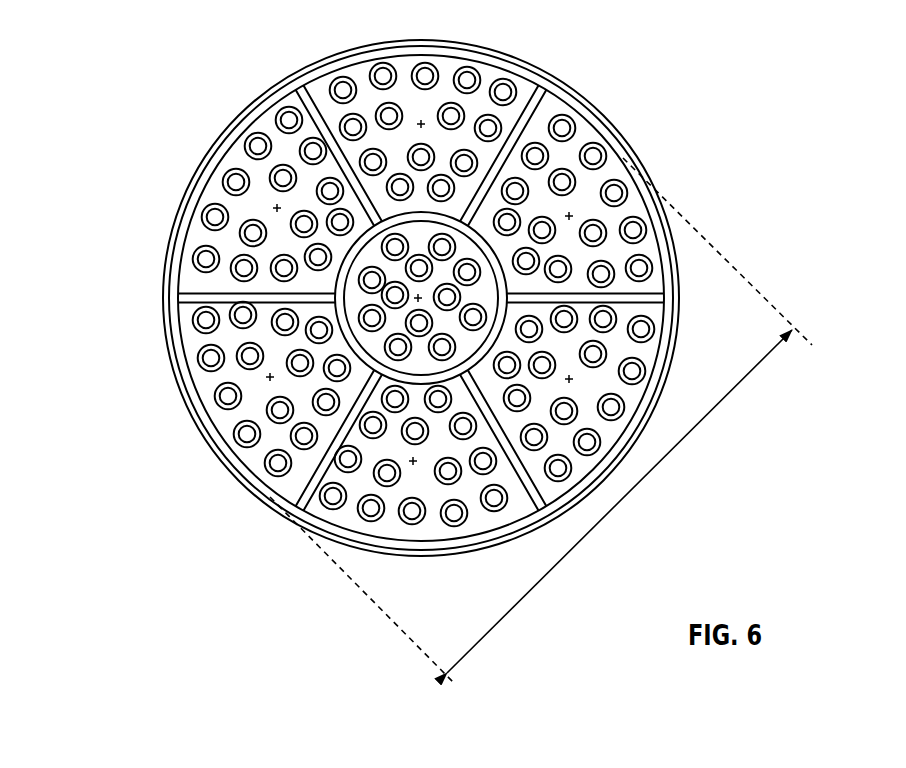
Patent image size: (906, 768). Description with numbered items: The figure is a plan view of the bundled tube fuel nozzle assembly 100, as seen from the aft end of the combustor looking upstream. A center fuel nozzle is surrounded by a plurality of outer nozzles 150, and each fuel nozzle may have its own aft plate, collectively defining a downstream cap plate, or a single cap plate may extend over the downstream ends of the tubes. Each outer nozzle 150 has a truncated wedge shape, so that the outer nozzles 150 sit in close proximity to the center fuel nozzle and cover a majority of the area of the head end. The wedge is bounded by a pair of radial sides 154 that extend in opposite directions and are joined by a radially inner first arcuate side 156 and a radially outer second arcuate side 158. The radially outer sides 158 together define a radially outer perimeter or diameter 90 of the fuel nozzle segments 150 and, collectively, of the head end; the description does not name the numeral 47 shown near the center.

The bundled tube fuel nozzle assembly 100 is at (657, 94).
The outer nozzle 150 is at (228, 145).
The radial side 154 is at (327, 140).
The first arcuate side 156 is at (343, 197).
The second arcuate side 158 is at (200, 190).
The central aperture 47 is at (408, 293).
The radially outer perimeter or diameter 90 is at (541, 420).